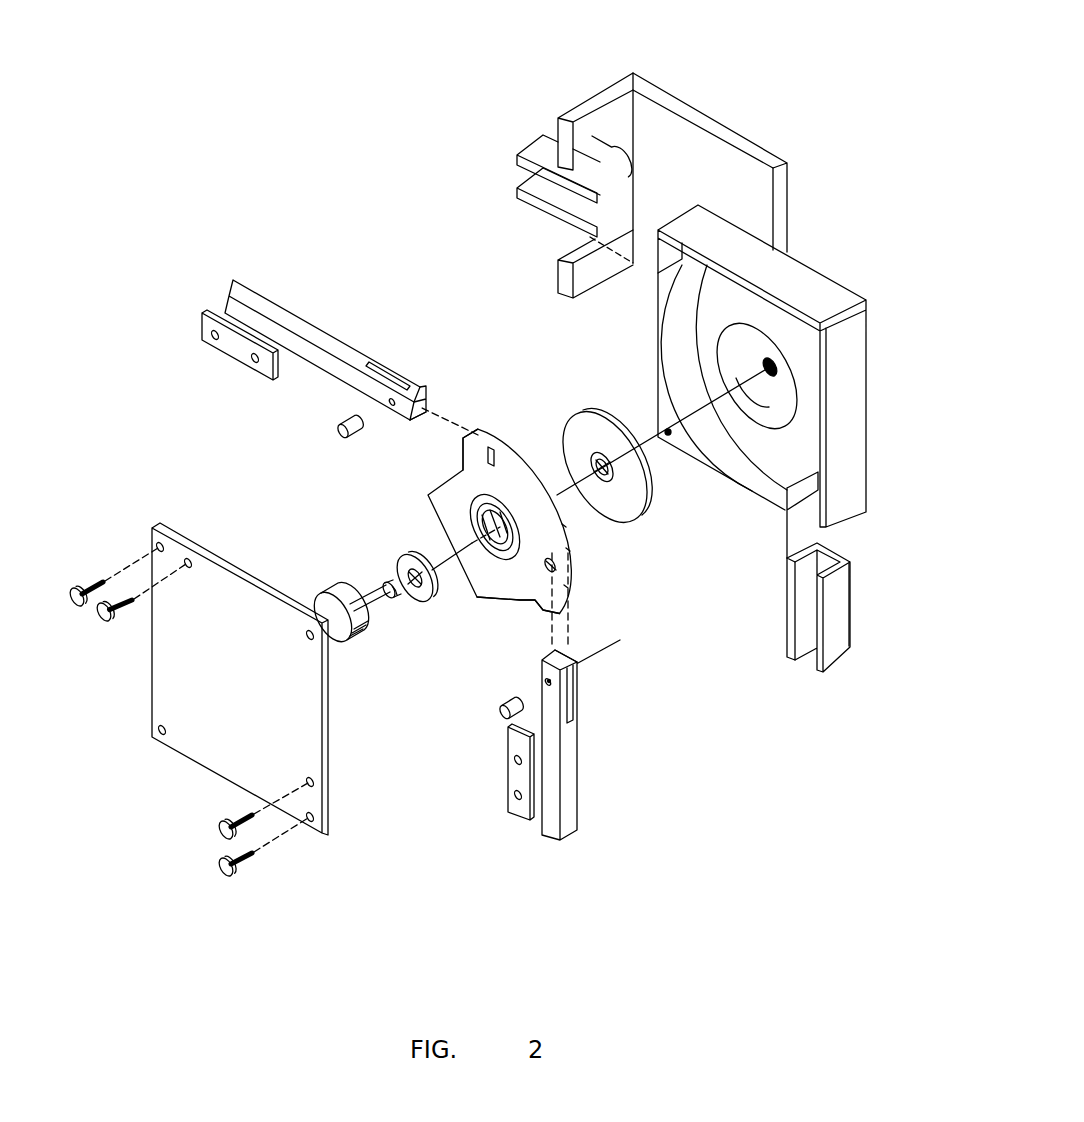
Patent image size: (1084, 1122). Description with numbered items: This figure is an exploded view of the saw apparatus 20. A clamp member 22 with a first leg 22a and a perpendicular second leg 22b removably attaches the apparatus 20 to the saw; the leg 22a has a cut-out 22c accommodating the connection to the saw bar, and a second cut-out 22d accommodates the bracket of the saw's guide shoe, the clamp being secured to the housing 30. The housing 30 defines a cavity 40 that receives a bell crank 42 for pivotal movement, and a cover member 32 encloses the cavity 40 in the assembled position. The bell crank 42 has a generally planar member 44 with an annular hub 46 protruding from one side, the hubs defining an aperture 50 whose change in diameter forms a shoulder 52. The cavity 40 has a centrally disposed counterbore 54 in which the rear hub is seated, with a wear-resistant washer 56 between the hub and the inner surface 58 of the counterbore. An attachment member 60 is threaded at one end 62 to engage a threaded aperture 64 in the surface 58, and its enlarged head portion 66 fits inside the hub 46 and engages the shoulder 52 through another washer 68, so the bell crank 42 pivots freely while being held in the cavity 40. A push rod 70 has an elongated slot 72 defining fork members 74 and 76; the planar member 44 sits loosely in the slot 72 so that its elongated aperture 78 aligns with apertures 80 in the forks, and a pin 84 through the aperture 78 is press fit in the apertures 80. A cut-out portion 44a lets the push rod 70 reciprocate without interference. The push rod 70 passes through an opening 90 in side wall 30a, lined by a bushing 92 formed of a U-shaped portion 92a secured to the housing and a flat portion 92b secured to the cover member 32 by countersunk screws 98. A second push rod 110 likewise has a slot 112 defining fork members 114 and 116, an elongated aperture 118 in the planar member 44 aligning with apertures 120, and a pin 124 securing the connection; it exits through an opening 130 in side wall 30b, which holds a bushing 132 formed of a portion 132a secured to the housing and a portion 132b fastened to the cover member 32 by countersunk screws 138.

The apparatus 20 is at (855, 279).
The clamp member 22 is at (785, 192).
The first leg 22a is at (597, 100).
The second leg 22b is at (693, 115).
The cut-out 22c is at (600, 158).
The second cut-out 22d is at (573, 248).
The housing 30 is at (848, 347).
The side wall 30a is at (655, 333).
The side wall 30b is at (712, 467).
The cover member 32 is at (313, 783).
The cavity 40 is at (768, 467).
The bell crank 42 is at (463, 470).
The planar member 44 is at (557, 545).
The cut-out portion 44a is at (466, 468).
The annular hub 46 is at (503, 553).
The aperture 50 is at (470, 540).
The shoulder 52 is at (488, 547).
The counterbore 54 is at (747, 410).
The washer 56 is at (598, 402).
The inner surface 58 is at (747, 340).
The attachment member 60 is at (340, 643).
The threaded end 62 is at (387, 583).
The threaded aperture 64 is at (773, 363).
The enlarged head portion 66 is at (317, 603).
The washer 68 is at (432, 587).
The push rod 70 is at (280, 312).
The elongated slot 72 is at (427, 403).
The fork member 74 is at (402, 416).
The fork member 76 is at (387, 370).
The elongated aperture 78 is at (493, 445).
The apertures 80 is at (387, 400).
The pin 84 is at (340, 433).
The opening 90 is at (657, 273).
The bushing 92 is at (537, 153).
The U-shaped bushing portion 92a is at (535, 202).
The flat bushing portion 92b is at (235, 348).
The countersunk screws 98 is at (100, 620).
The push rod 110 is at (573, 780).
The elongated slot 112 is at (570, 698).
The fork member 114 is at (542, 670).
The fork member 116 is at (577, 673).
The elongated aperture 118 is at (560, 570).
The apertures 120 is at (545, 680).
The pin 124 is at (502, 702).
The opening 130 is at (807, 503).
The bushing 132 is at (833, 632).
The bushing portion 132a is at (837, 592).
The bushing portion 132b is at (510, 803).
The countersunk screws 138 is at (220, 863).